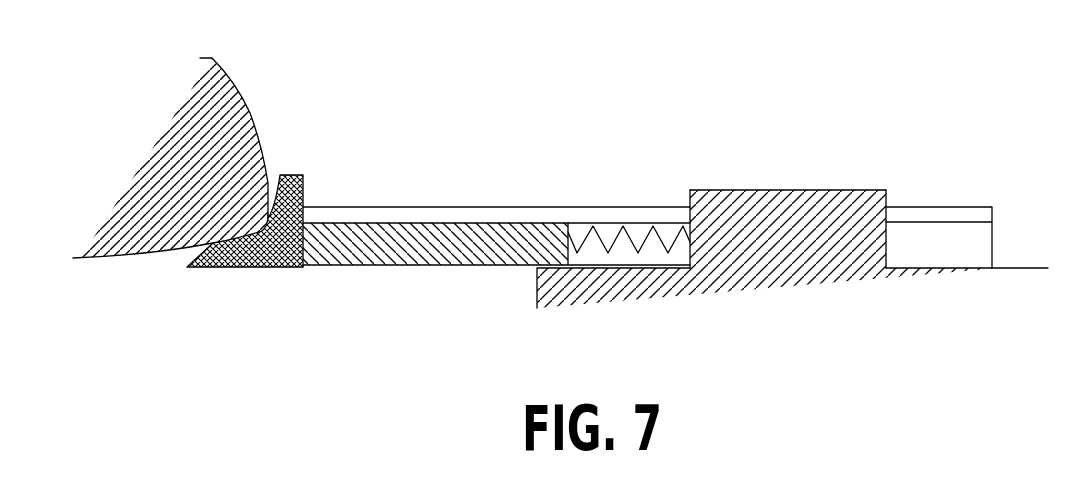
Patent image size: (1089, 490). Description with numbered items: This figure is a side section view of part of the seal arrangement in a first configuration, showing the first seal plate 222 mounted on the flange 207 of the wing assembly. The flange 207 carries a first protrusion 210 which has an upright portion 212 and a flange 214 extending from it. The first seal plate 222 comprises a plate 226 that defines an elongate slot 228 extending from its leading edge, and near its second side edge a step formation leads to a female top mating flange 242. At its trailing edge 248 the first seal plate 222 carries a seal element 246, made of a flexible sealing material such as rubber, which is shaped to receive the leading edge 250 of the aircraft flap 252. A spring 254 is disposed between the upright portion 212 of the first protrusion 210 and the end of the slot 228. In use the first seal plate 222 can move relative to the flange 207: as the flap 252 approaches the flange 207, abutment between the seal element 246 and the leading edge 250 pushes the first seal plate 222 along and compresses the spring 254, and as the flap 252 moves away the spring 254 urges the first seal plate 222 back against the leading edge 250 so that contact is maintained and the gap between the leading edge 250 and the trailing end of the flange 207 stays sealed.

The flange 207 is at (808, 283).
The first protrusion 210 is at (809, 164).
The upright portion 212 is at (889, 230).
The flange 214 is at (707, 190).
The first seal plate 222 is at (496, 154).
The plate 226 is at (402, 270).
The elongate slot 228 is at (937, 238).
The female top mating flange 242 is at (492, 212).
The seal element 246 is at (205, 268).
The trailing edge 248 is at (234, 262).
The leading edge 250 is at (253, 127).
The aircraft flap 252 is at (181, 145).
The spring 254 is at (598, 222).